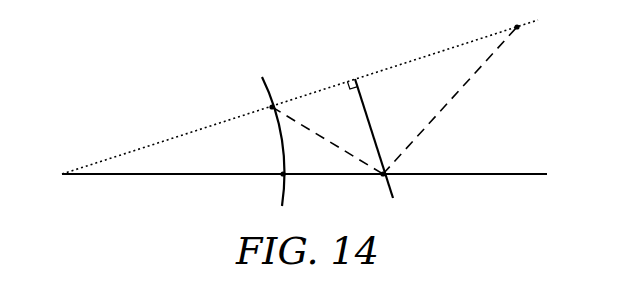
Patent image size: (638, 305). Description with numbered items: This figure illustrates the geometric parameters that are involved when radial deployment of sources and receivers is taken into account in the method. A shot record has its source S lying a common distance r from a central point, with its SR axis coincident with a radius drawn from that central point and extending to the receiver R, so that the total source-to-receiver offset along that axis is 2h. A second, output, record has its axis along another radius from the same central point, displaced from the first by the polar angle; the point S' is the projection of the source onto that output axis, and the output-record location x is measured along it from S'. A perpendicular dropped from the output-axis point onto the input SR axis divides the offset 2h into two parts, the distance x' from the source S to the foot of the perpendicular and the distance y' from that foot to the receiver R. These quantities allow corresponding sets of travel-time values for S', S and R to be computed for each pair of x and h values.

The source location S is at (264, 141).
The projected source location S' is at (272, 186).
The receiver location R is at (519, 15).
The common distance r is at (304, 162).
The output record offset x is at (357, 185).
The distance along SR axis from source to perpendicular foot x' is at (332, 138).
The distance along SR axis from perpendicular foot to receiver y' is at (450, 100).
The source-receiver offset 2h is at (300, 97).